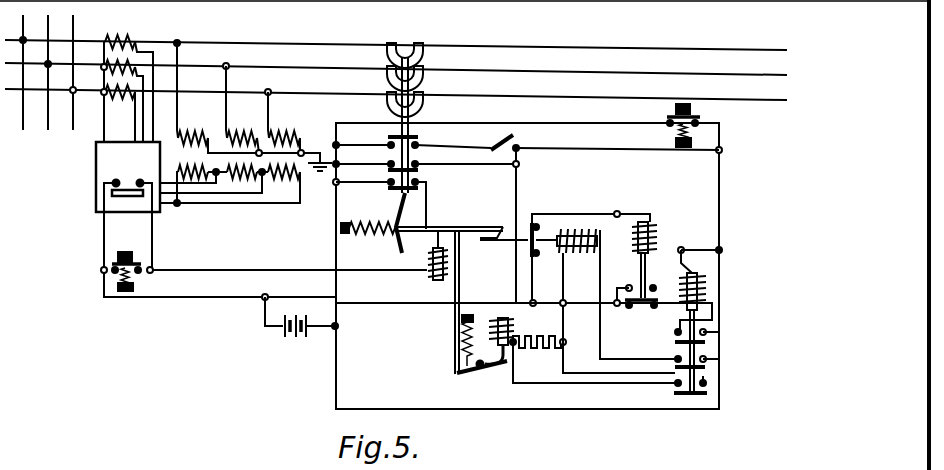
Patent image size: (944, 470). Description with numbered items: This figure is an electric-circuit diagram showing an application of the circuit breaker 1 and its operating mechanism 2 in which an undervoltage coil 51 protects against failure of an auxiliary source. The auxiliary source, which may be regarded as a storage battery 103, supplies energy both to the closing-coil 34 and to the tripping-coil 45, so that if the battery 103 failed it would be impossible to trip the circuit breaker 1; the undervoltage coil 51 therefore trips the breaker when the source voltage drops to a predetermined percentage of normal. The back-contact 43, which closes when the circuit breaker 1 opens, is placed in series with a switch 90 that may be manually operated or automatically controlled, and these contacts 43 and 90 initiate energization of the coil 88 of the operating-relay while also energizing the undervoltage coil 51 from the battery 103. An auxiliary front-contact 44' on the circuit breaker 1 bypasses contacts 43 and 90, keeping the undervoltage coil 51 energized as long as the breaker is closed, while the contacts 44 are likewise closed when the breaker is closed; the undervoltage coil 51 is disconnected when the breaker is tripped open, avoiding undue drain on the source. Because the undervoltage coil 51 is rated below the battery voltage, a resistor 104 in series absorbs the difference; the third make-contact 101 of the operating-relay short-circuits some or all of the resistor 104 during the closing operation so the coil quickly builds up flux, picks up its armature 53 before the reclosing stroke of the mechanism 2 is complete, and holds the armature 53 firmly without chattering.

The oil circuit breaker 1 is at (417, 37).
The operating mechanism 2 is at (494, 223).
The closing-coil 34 is at (586, 256).
The back-contact 43 is at (417, 145).
The contacts 44 is at (379, 204).
The auxiliary front-contact 44' is at (426, 175).
The tripping-coil 45 is at (427, 277).
The undervoltage coil 51 is at (510, 323).
The armature 53 is at (508, 366).
The coil 88 is at (706, 282).
The switch 90 is at (517, 136).
The third make-contact 101 is at (707, 392).
The storage battery 103 is at (287, 335).
The resistor 104 is at (541, 345).